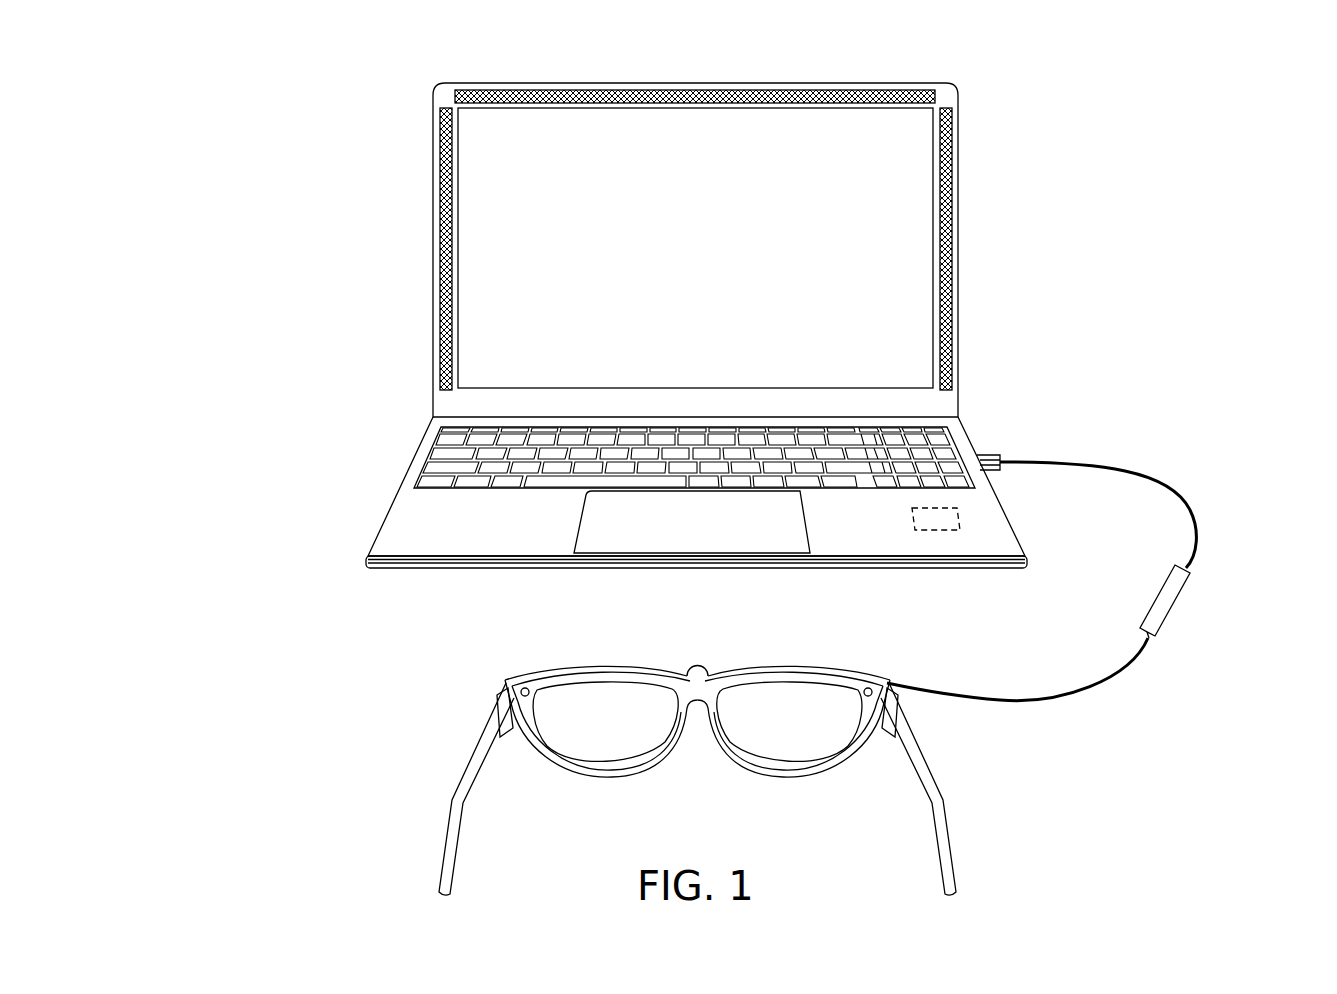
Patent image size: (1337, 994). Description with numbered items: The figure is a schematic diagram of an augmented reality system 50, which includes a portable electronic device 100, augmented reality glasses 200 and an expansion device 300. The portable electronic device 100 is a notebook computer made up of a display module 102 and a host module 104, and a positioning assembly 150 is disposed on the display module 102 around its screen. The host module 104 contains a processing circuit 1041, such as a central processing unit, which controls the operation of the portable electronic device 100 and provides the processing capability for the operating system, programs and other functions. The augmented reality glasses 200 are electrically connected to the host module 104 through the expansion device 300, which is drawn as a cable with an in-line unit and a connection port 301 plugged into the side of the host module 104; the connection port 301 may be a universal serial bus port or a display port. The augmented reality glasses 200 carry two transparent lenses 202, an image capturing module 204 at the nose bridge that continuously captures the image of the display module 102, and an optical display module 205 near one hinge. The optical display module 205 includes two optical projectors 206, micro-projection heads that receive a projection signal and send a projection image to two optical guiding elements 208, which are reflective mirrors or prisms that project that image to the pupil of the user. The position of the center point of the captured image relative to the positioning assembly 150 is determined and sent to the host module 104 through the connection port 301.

The augmented reality system 50 is at (291, 91).
The portable electronic device 100 is at (953, 80).
The positioning assembly 150 is at (441, 146).
The display module 102 is at (497, 277).
The host module 104 is at (410, 518).
The connection port 301 is at (993, 455).
The processing circuit 1041 is at (958, 508).
The expansion device 300 is at (1207, 563).
The augmented reality glasses 200 is at (425, 771).
The lens 202 is at (607, 737).
The image capturing module 204 is at (697, 675).
The optical display module 205 is at (940, 615).
The optical projector 206 is at (503, 692).
The optical guiding element 208 is at (525, 688).